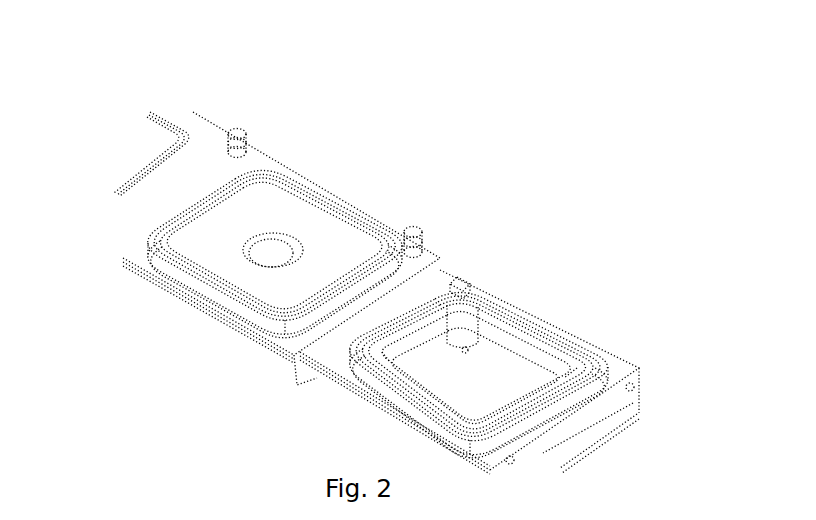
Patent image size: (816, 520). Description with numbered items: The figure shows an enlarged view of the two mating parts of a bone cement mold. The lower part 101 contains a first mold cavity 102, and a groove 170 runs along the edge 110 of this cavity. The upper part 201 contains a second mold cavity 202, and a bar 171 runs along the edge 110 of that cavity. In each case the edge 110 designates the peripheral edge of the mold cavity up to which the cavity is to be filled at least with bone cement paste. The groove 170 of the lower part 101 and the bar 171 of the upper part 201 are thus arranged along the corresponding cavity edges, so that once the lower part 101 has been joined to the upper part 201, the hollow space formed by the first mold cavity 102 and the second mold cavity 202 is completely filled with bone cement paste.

The upper part 201 is at (182, 68).
The lower part 101 is at (483, 238).
The edge 110 is at (335, 216).
The bar 171 is at (210, 277).
The groove 170 is at (387, 380).
The second mold cavity 202 is at (258, 282).
The first mold cavity 102 is at (470, 387).